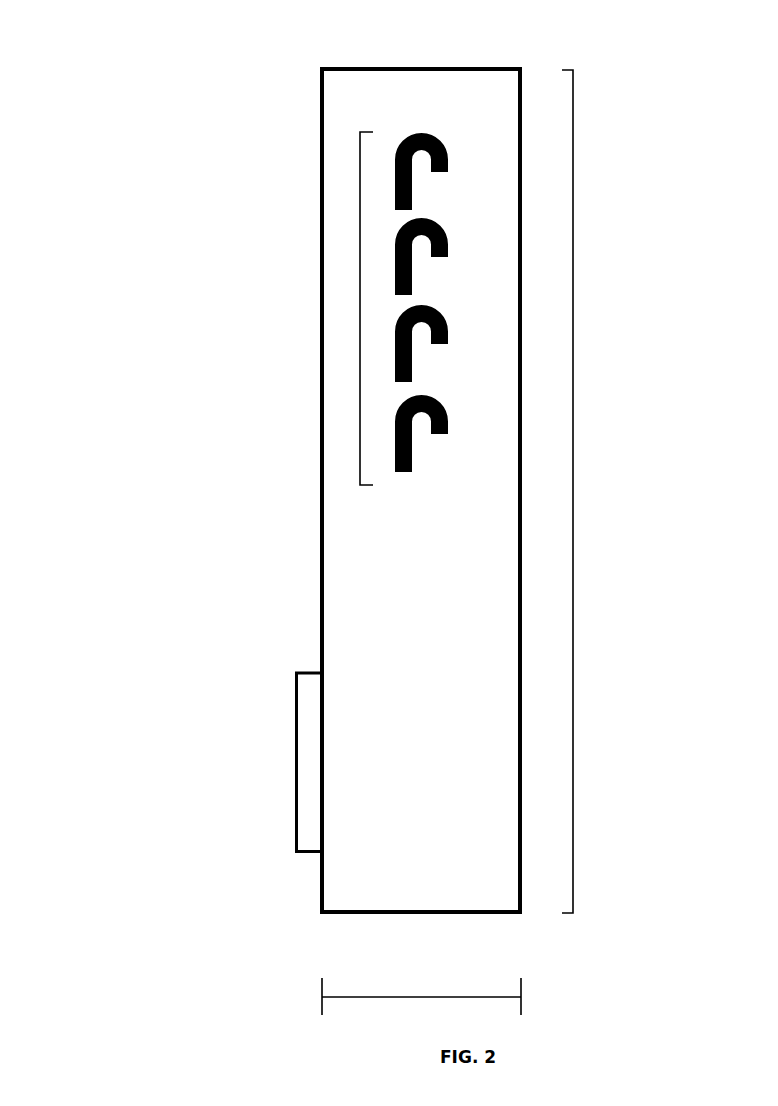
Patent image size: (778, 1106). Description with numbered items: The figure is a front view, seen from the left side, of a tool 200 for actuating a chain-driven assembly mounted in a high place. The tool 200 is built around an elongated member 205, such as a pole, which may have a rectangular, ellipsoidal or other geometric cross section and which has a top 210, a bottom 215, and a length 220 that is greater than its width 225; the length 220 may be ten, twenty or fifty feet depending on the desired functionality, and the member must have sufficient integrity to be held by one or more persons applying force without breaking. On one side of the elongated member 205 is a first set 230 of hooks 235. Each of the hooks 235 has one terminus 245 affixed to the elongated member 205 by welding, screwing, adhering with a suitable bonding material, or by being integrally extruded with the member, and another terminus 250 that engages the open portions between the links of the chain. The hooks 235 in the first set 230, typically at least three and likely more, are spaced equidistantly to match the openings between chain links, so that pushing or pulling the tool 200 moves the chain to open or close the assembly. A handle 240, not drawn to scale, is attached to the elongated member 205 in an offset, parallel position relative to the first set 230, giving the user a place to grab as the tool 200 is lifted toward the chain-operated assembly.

The tool 200 is at (93, 62).
The elongated member 205 is at (347, 108).
The top 210 is at (418, 67).
The bottom 215 is at (352, 913).
The length 220 is at (575, 492).
The width 225 is at (430, 995).
The first set 230 is at (358, 311).
The hooks 235 is at (440, 226).
The handle 240 is at (297, 740).
The terminus 245 is at (410, 473).
The terminus 250 is at (443, 436).